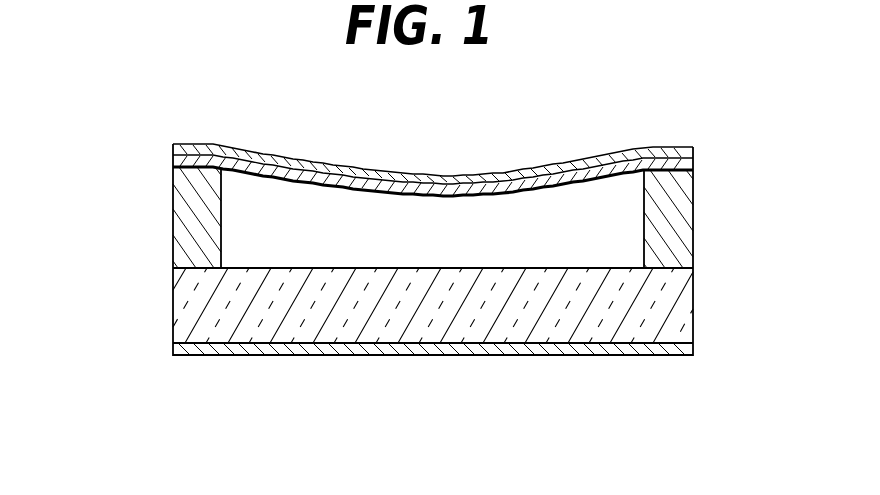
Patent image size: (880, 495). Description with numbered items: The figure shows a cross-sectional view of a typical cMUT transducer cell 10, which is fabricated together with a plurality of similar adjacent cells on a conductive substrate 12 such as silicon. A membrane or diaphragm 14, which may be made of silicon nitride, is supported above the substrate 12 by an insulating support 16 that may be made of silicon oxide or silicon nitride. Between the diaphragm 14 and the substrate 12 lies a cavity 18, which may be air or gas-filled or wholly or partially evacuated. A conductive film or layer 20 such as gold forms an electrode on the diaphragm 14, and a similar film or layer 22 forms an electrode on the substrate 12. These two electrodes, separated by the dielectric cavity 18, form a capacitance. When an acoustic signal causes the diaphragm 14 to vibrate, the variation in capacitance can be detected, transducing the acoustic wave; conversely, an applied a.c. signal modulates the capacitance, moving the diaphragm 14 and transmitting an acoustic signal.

The cMUT transducer cell 10 is at (435, 156).
The conductive substrate 12 is at (657, 325).
The membrane or diaphragm 14 is at (190, 161).
The insulating support 16 is at (192, 217).
The cavity 18 is at (550, 238).
The conductive film or layer 20 is at (680, 153).
The conductive film or layer 22 is at (193, 352).